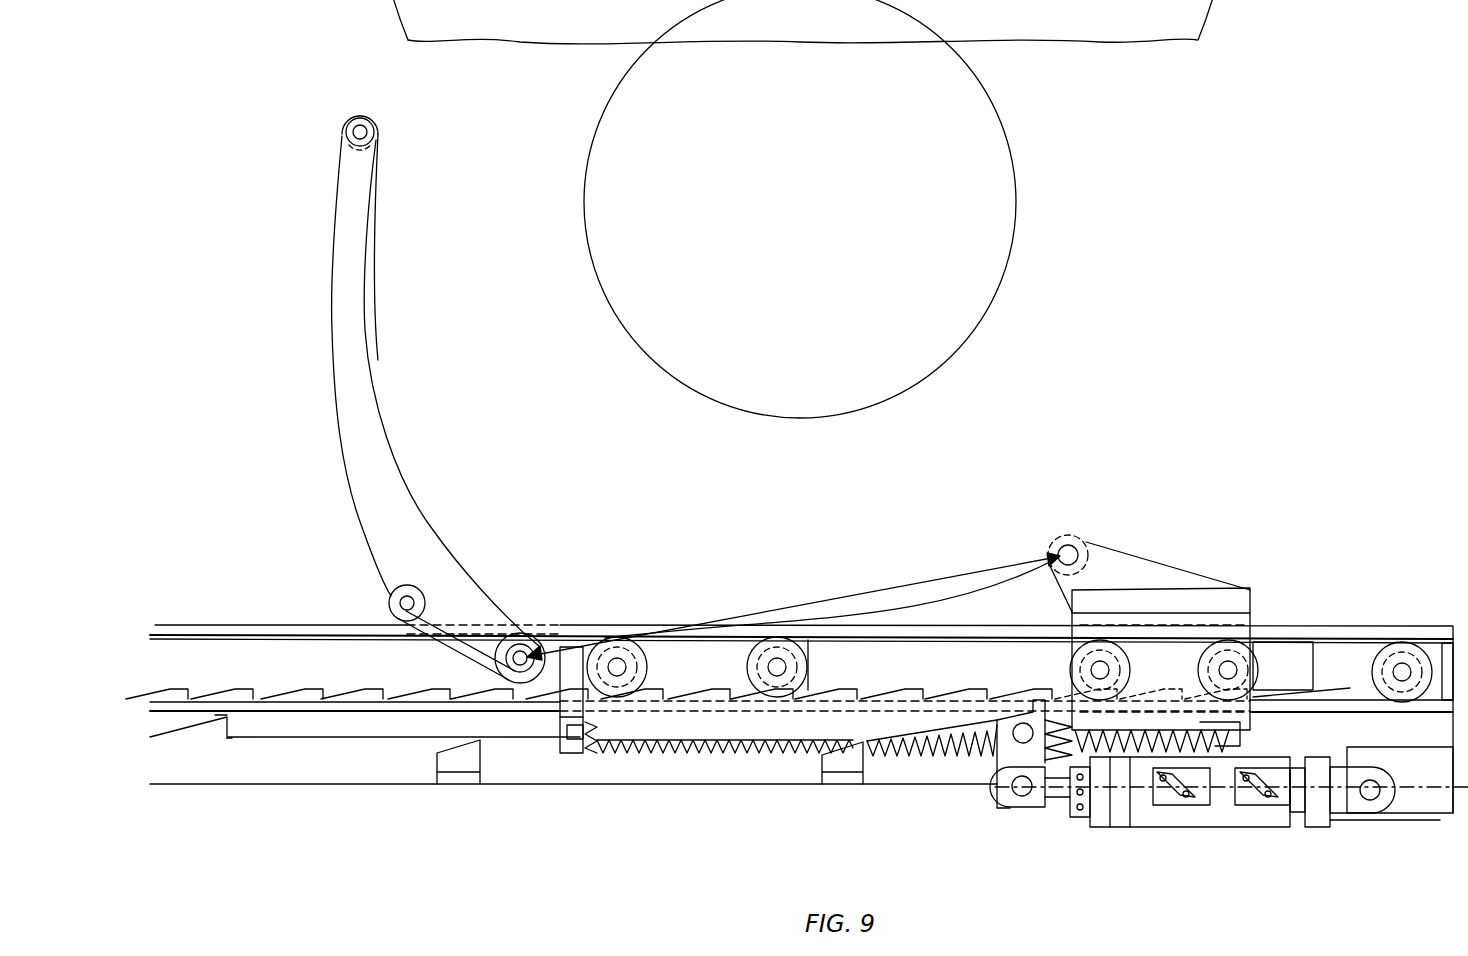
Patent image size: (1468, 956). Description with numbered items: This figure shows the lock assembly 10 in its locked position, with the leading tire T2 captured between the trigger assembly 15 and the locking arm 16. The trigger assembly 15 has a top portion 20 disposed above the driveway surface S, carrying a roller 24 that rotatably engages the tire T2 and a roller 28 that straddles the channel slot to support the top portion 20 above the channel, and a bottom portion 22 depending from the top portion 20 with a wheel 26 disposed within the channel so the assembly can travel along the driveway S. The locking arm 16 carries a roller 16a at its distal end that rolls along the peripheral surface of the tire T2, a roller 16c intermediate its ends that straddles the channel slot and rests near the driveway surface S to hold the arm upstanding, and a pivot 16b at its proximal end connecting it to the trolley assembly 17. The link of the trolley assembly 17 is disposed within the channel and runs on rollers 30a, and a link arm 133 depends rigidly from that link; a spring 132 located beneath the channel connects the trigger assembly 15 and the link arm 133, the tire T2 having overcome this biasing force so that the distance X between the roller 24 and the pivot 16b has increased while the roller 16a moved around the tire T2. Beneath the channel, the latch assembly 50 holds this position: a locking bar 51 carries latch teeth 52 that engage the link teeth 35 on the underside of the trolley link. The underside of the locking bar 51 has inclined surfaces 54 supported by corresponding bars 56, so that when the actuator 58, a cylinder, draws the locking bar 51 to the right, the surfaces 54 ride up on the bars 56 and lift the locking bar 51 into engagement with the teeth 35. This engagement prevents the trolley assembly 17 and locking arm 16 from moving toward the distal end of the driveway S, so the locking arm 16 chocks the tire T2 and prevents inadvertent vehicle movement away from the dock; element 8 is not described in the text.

The leading tire T2 is at (1212, 162).
The locking arm 16 is at (336, 348).
The roller 16a is at (346, 134).
The pivot 16b is at (502, 640).
The roller 16c is at (395, 612).
The distance X is at (793, 606).
The driveway surface S is at (234, 625).
The inclined surfaces 54 is at (183, 742).
The teeth 52 is at (248, 702).
The locking bar 51 is at (305, 738).
The bars 56 is at (460, 760).
The link arm 133 is at (575, 727).
The trolley assembly 17 is at (690, 795).
The block 8 is at (838, 796).
The spring 132 is at (922, 757).
The link teeth 35 is at (722, 692).
The roller 24 is at (1075, 548).
The trigger assembly 15 is at (1222, 590).
The top portion 20 is at (1253, 605).
The roller 28 is at (1072, 665).
The wheel 26 is at (1252, 662).
The roller 30a is at (597, 647).
The latch assembly 50 is at (995, 818).
The actuator 58 is at (1214, 812).
The bottom portion 22 is at (1240, 728).
The lock assembly 10 is at (1290, 838).